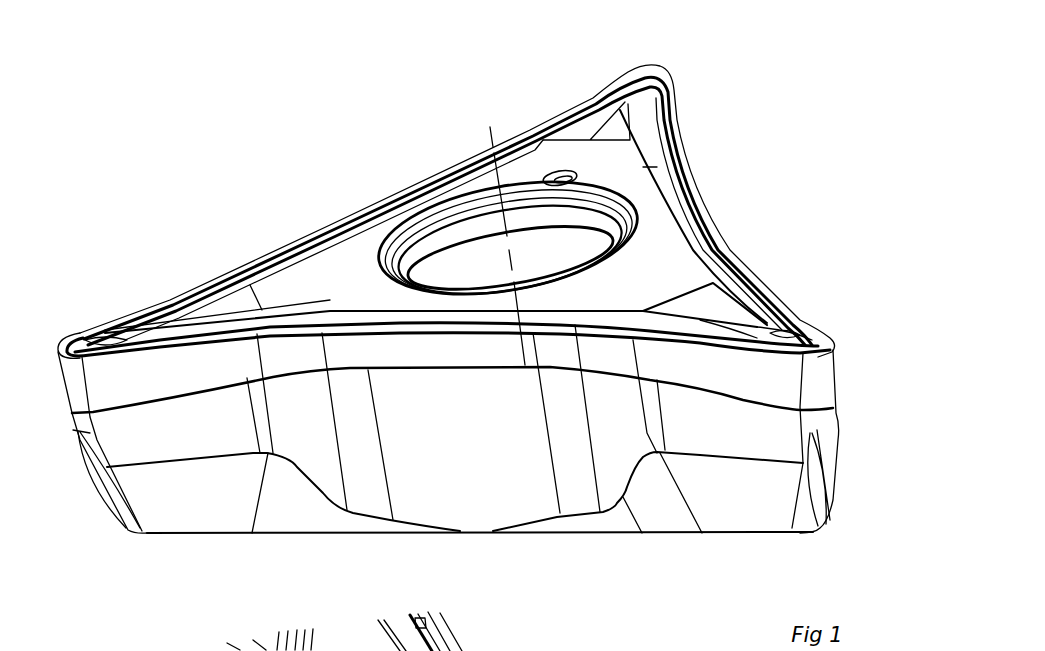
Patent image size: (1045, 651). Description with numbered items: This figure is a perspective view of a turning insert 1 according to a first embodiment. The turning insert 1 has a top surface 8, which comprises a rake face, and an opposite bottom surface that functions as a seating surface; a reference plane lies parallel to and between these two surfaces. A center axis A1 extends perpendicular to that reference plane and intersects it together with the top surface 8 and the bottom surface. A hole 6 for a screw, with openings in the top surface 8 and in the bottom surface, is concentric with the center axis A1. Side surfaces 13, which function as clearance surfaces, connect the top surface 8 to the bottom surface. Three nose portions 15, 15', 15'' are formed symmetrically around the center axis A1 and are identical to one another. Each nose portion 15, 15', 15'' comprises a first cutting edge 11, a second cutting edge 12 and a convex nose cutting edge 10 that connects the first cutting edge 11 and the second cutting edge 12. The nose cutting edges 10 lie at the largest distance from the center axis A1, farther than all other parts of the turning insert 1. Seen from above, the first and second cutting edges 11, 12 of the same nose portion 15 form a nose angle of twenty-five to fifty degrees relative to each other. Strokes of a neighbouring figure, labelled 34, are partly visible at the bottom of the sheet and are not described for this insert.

The turning insert 1 is at (292, 112).
The nose portion 15' is at (184, 290).
The nose portion 15'' is at (593, 87).
The nose portion 15 is at (844, 317).
The center axis A1 is at (499, 233).
The top surface 8 is at (660, 243).
The first cutting edge 11 is at (790, 317).
The nose cutting edge 10 is at (833, 352).
The central hole 6 is at (508, 238).
The side surfaces 13 is at (452, 429).
The second cutting edge 12 is at (745, 312).
The adjacent figure element 34 is at (385, 631).